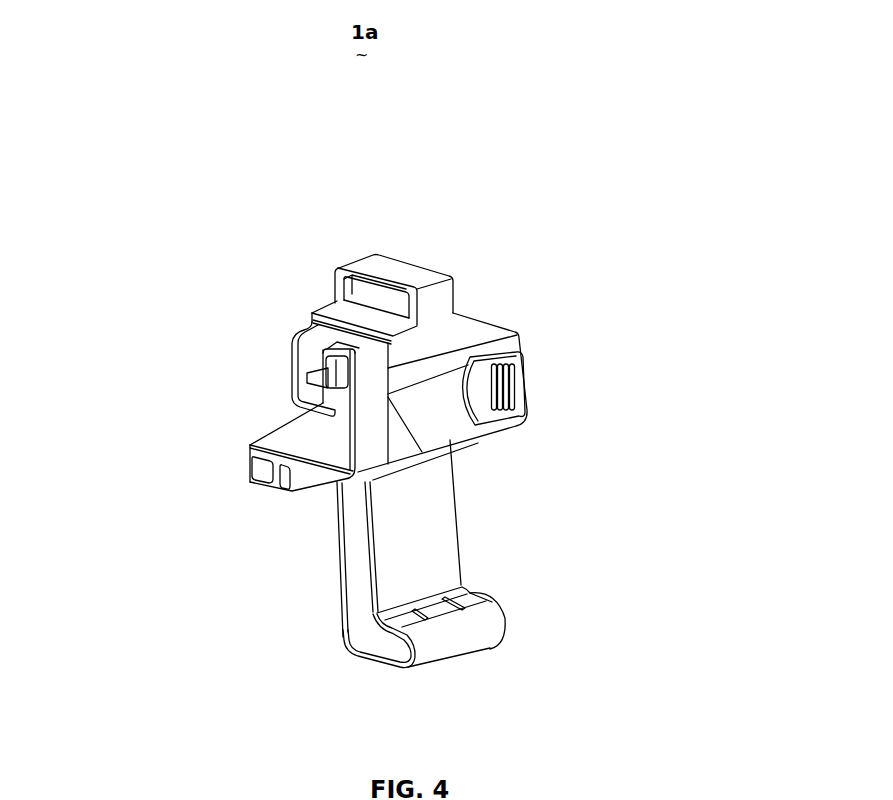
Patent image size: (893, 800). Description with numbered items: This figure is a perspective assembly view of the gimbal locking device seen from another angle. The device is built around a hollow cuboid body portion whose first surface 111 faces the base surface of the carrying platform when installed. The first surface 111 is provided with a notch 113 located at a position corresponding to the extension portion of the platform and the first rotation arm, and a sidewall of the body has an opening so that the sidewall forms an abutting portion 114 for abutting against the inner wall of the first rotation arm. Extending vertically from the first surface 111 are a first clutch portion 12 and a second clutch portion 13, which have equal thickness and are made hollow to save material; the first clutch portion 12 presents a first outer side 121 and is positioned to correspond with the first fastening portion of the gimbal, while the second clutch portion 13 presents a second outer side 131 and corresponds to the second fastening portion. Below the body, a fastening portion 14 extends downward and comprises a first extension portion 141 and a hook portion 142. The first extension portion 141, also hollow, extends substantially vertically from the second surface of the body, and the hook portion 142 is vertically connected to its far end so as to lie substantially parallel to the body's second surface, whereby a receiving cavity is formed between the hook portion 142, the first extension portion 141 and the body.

The first clutch portion 12 is at (515, 268).
The first outer side 121 is at (455, 287).
The first surface 111 is at (457, 332).
The notch 113 is at (316, 318).
The abutting portion 114 is at (297, 362).
The second clutch portion 13 is at (297, 398).
The second outer side 131 is at (367, 372).
The fastening portion 14 is at (341, 615).
The first extension portion 141 is at (407, 556).
The hook portion 142 is at (443, 638).